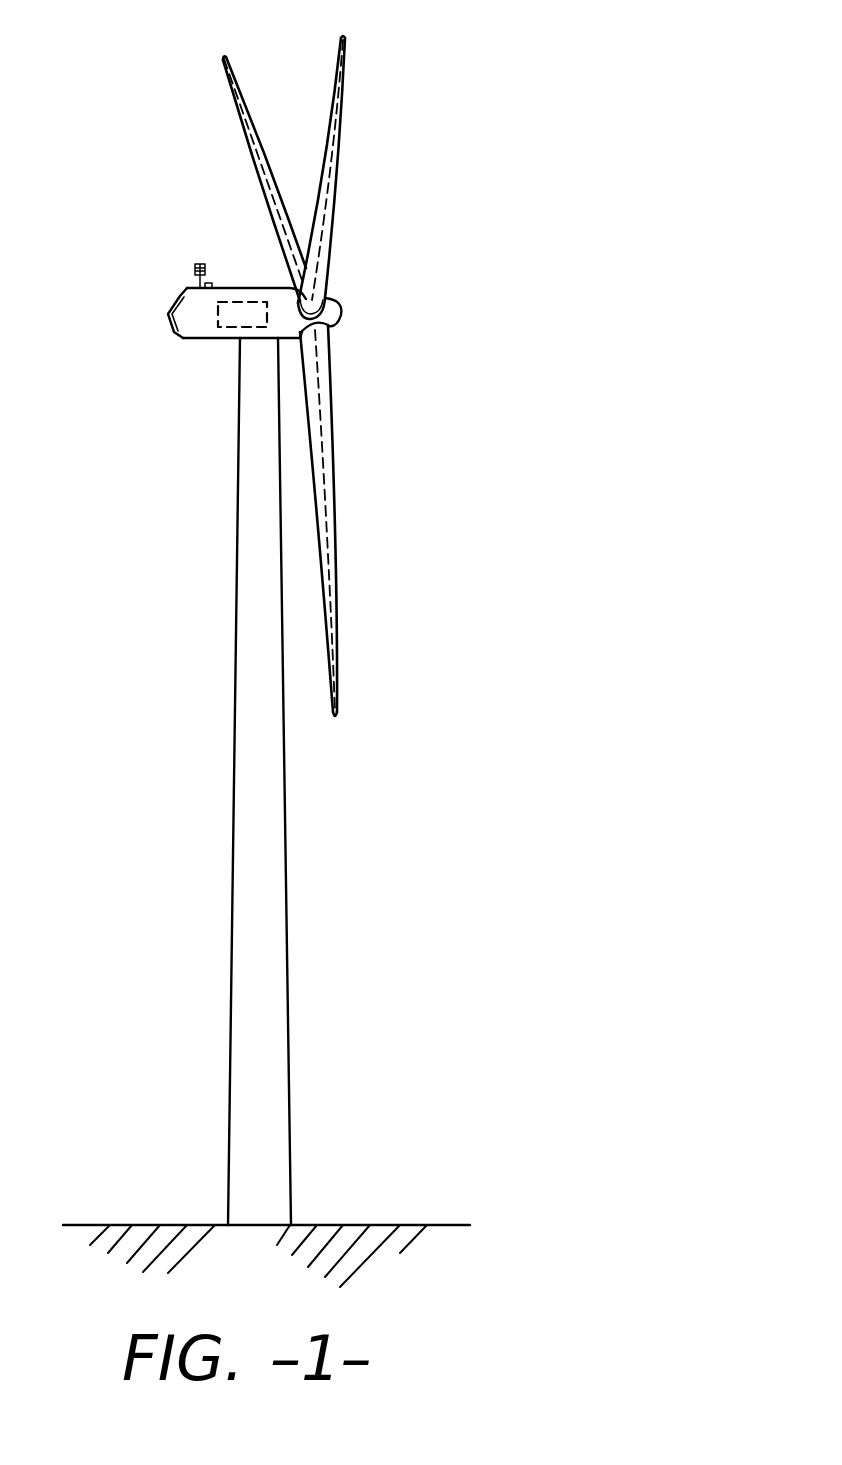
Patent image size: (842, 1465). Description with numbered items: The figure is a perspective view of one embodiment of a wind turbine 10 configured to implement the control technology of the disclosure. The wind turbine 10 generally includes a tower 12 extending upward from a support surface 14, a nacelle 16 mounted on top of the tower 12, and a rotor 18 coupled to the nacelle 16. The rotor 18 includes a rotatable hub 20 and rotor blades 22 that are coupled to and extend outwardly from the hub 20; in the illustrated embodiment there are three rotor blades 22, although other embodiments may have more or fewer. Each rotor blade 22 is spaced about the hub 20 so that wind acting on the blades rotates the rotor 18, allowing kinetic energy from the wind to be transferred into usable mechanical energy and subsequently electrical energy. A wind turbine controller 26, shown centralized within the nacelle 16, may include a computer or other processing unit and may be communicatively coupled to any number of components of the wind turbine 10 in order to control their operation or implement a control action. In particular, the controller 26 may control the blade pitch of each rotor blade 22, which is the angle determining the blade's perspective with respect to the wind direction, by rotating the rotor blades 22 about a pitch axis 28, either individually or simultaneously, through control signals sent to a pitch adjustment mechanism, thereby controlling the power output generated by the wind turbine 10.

The wind turbine 10 is at (452, 115).
The tower 12 is at (242, 905).
The support surface 14 is at (150, 1225).
The nacelle 16 is at (212, 340).
The rotor 18 is at (346, 286).
The rotatable hub 20 is at (339, 318).
The rotor blade 22 is at (334, 81).
The wind turbine controller 26 is at (247, 301).
The pitch axis 28 is at (262, 189).